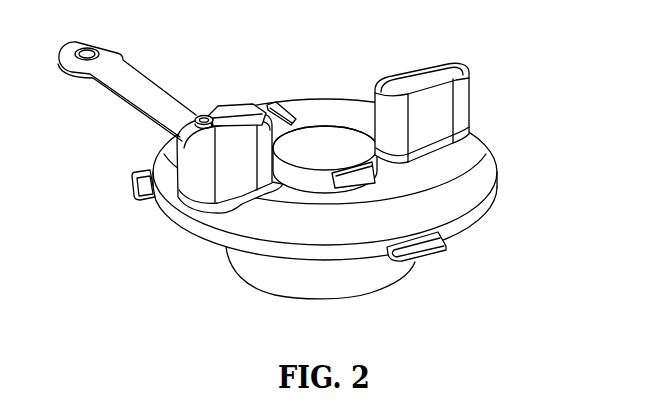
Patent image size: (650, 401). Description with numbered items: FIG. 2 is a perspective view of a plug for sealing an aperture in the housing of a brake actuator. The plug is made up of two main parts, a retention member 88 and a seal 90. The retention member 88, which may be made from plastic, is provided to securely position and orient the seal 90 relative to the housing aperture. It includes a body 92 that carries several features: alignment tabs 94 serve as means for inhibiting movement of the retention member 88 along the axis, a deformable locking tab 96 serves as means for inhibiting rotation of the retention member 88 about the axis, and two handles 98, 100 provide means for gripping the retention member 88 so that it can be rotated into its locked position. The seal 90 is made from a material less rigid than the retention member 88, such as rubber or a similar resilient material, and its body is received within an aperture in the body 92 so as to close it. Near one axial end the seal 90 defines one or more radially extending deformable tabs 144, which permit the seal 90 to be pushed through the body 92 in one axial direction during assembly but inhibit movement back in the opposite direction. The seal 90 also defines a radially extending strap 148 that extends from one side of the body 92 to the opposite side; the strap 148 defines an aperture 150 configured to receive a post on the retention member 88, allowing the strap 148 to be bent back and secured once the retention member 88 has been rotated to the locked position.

The retention member 88 is at (465, 168).
The seal 90 is at (323, 138).
The body 92 is at (203, 230).
The alignment tabs 94 is at (141, 183).
The deformable locking tab 96 is at (237, 111).
The handle 98 is at (236, 182).
The handle 100 is at (457, 102).
The deformable tabs 144 is at (356, 177).
The strap 148 is at (140, 88).
The aperture 150 is at (90, 62).